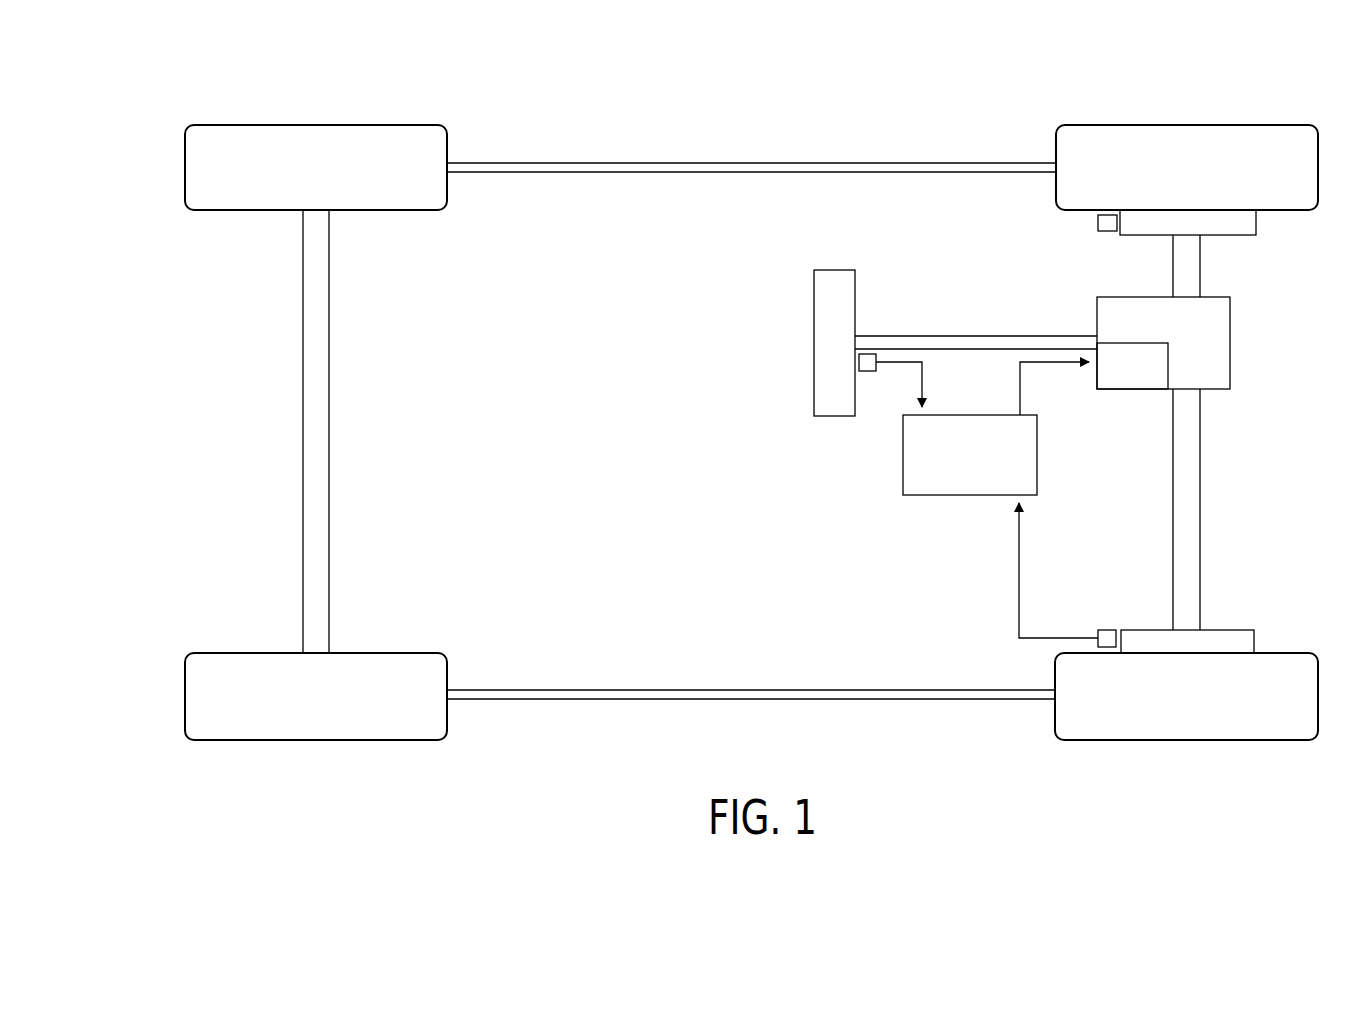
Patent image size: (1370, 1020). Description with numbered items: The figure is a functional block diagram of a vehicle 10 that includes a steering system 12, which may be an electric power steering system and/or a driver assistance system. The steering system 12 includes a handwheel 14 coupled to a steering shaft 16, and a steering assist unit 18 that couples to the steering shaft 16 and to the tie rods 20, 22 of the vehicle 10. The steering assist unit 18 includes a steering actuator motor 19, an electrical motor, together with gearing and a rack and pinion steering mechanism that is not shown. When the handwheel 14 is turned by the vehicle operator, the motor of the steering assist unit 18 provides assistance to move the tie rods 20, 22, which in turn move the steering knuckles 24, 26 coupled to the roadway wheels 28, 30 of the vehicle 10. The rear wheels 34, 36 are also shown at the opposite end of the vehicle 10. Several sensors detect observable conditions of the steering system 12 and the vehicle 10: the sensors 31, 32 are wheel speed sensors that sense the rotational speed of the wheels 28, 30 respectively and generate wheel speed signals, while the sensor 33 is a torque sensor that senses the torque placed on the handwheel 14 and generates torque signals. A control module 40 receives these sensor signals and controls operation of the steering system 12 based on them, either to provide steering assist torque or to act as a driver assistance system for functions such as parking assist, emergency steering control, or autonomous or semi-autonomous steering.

The vehicle 10 is at (1120, 105).
The steering system 12 is at (912, 283).
The handwheel 14 is at (828, 270).
The steering shaft 16 is at (978, 336).
The steering assist unit 18 is at (1231, 348).
The steering actuator motor 19 is at (1168, 375).
The tie rod 20 is at (1200, 282).
The tie rod 22 is at (1200, 522).
The steering knuckle 24 is at (1140, 236).
The steering knuckle 26 is at (1230, 630).
The roadway wheel 28 is at (1056, 141).
The roadway wheel 30 is at (1285, 653).
The wheel speed sensor 31 is at (1098, 222).
The wheel speed sensor 32 is at (1112, 630).
The torque sensor 33 is at (868, 354).
The rear wheel 34 is at (447, 147).
The rear wheel 36 is at (447, 676).
The control module 40 is at (952, 415).